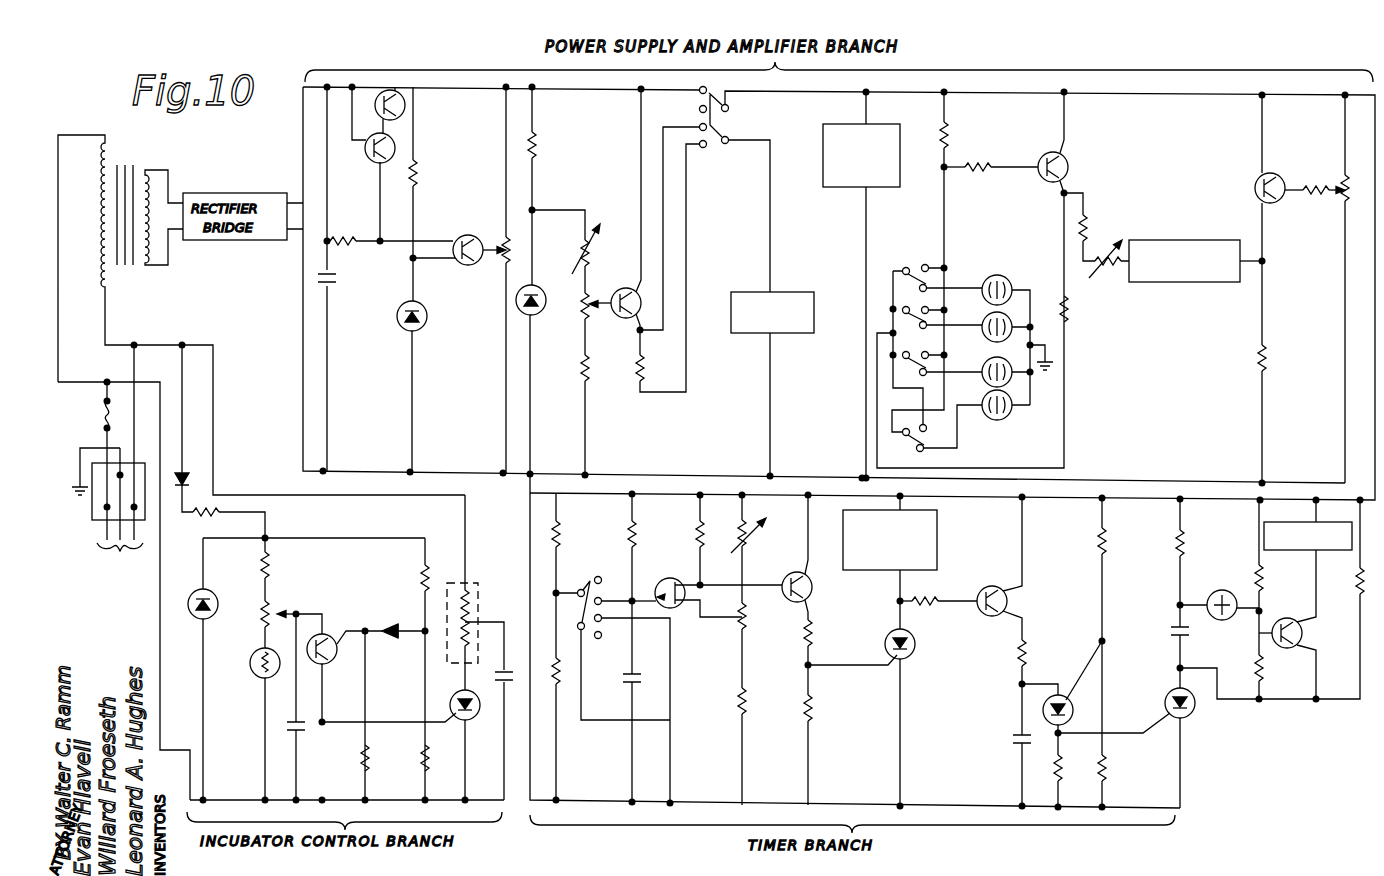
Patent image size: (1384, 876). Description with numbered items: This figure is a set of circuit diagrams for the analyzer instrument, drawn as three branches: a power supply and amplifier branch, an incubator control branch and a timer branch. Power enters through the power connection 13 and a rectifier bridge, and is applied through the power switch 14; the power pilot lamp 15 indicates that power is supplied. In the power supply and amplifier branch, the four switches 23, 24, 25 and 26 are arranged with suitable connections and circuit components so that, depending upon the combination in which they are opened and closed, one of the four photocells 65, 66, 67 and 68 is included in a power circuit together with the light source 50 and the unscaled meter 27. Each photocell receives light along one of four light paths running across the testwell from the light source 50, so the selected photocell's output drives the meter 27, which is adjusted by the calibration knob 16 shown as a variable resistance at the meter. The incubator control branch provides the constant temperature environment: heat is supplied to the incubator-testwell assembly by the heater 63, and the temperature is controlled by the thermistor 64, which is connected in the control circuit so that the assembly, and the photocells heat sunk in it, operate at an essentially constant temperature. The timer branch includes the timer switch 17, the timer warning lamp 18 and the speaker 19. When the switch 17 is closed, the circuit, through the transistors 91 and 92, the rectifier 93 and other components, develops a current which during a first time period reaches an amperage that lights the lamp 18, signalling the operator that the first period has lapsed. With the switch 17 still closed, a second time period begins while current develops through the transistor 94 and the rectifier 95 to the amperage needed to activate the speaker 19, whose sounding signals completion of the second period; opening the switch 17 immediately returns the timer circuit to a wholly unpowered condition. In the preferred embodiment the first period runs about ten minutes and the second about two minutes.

The power connection 13 is at (108, 460).
The power switch 14 is at (724, 121).
The power pilot lamp 15 is at (830, 168).
The calibration knob 16 is at (1100, 276).
The timer switch 17 is at (582, 589).
The timer warning lamp 18 is at (853, 570).
The speaker 19 is at (1308, 552).
The switch 23 is at (914, 444).
The switch 24 is at (912, 362).
The switch 25 is at (912, 321).
The switch 26 is at (914, 266).
The unscaled meter 27 is at (1223, 282).
The light source 50 is at (758, 334).
The heater 63 is at (478, 592).
The thermistor 64 is at (252, 669).
The photocell 65 is at (1003, 421).
The photocell 66 is at (986, 380).
The photocell 67 is at (986, 337).
The photocell 68 is at (995, 278).
The transistor 91 is at (673, 577).
The transistor 92 is at (797, 572).
The rectifier 93 is at (913, 652).
The transistor 94 is at (1068, 691).
The rectifier 95 is at (1166, 702).